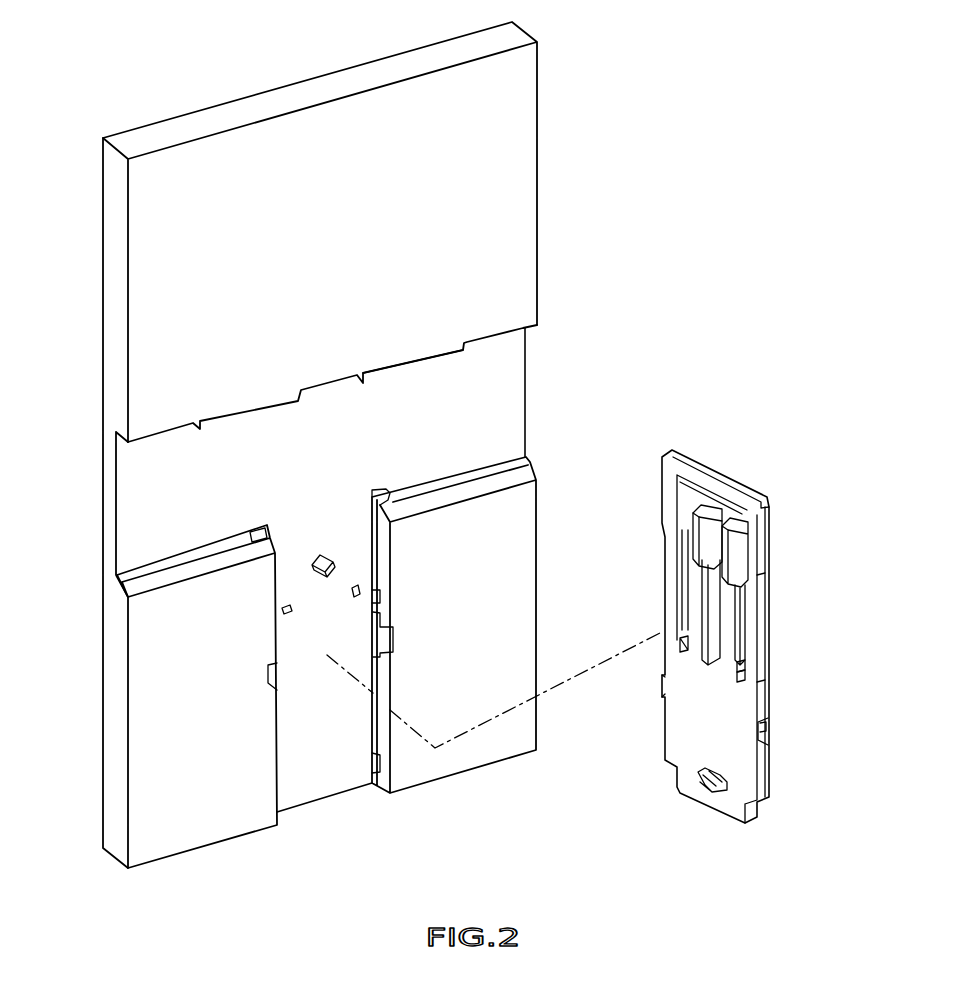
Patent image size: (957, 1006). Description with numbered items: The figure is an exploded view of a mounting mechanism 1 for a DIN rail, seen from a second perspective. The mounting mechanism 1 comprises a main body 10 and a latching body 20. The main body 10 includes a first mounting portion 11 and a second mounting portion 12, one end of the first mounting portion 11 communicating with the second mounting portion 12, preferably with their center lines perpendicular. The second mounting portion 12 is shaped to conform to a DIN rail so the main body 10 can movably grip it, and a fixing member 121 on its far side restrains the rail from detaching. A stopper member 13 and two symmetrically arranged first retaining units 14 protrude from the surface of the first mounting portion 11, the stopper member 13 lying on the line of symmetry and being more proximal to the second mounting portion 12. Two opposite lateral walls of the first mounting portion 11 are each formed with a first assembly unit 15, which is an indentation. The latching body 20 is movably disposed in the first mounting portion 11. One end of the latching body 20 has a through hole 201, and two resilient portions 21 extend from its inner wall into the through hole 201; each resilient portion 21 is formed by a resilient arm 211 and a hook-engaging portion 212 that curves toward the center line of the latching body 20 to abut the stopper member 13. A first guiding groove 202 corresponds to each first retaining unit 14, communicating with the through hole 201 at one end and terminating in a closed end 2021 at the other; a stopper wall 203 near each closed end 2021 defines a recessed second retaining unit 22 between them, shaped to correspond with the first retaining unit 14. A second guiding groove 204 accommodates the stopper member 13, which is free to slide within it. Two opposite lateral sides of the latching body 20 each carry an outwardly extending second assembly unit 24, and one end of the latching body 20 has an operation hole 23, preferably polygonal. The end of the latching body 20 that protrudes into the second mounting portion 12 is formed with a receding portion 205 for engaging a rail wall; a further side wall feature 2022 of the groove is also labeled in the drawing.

The mounting mechanism 1 is at (722, 42).
The main body 10 is at (525, 262).
The first mounting portion 11 is at (323, 778).
The second mounting portion 12 is at (505, 400).
The fixing member 121 is at (415, 366).
The stopper member 13 is at (330, 550).
The first retaining unit 14 is at (282, 608).
The first assembly unit 15 is at (268, 672).
The latching body 20 is at (663, 465).
The through hole 201 is at (712, 468).
The receding portion 205 is at (753, 480).
The resilient portion 21 is at (728, 555).
The resilient arm 211 is at (695, 537).
The hook-engaging portion 212 is at (697, 513).
The first guiding groove 202 is at (685, 606).
The stopper wall 203 is at (743, 663).
The second guiding groove 204 is at (713, 667).
The second retaining unit 22 is at (743, 672).
The closed end 2021 is at (745, 687).
The side wall of slot 2022 is at (748, 585).
The operation hole 23 is at (710, 780).
The second assembly unit 24 is at (767, 740).